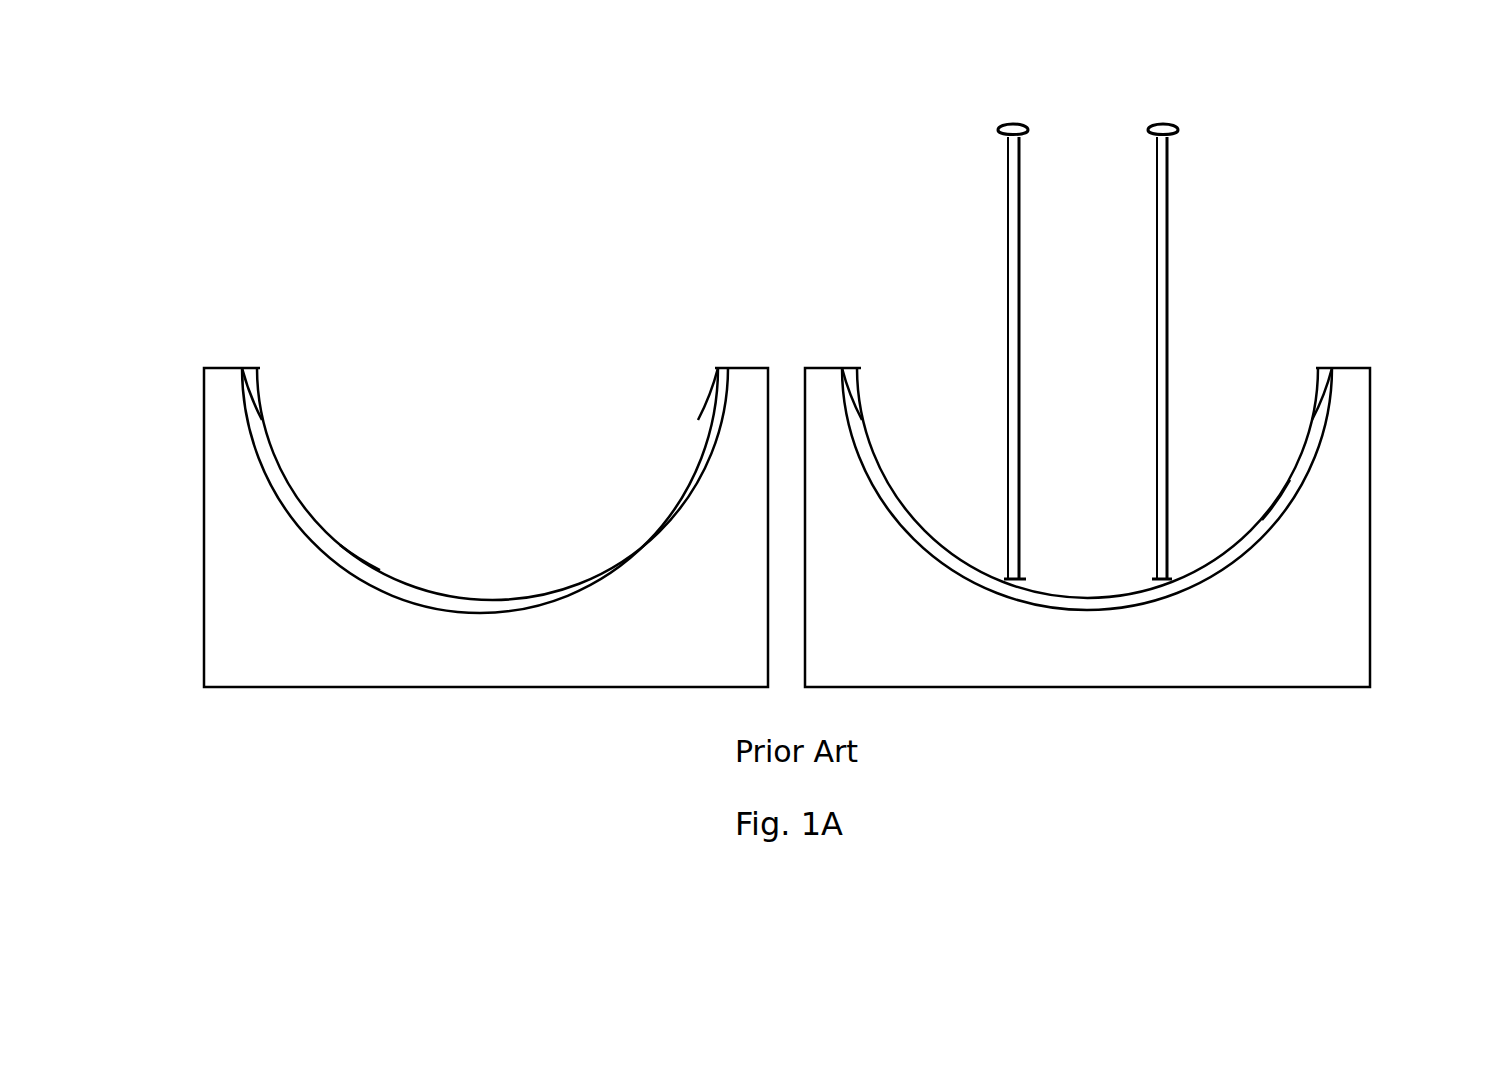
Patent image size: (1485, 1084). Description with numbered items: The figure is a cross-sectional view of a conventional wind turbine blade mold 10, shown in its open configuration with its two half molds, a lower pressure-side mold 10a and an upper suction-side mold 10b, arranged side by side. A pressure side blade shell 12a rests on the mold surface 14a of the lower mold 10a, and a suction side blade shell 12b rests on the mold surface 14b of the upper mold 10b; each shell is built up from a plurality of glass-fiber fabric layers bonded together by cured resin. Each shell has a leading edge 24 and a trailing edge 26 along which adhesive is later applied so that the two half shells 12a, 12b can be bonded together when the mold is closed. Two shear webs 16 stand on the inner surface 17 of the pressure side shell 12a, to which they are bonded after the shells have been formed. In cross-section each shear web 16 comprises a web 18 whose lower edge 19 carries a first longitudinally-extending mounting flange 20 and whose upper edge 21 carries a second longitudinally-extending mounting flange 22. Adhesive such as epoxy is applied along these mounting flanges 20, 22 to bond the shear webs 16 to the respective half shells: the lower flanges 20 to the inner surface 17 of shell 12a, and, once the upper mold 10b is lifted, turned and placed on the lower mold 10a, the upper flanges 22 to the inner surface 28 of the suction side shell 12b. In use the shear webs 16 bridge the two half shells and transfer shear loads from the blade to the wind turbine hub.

The mold 10 is at (768, 203).
The lower pressure-side mold 10a is at (1358, 665).
The upper suction-side mold 10b is at (222, 663).
The pressure side blade shell 12a is at (1313, 418).
The suction side blade shell 12b is at (630, 555).
The mold surface 14a is at (865, 437).
The mold surface 14b is at (265, 437).
The shear web 16 is at (1148, 305).
The inner surface 17 is at (1275, 498).
The web 18 is at (1006, 233).
The lower edge 19 is at (1145, 570).
The first longitudinally-extending mounting flange 20 is at (1001, 577).
The upper edge 21 is at (1147, 102).
The second longitudinally-extending mounting flange 22 is at (1010, 122).
The leading edge 24 is at (725, 367).
The trailing edge 26 is at (246, 367).
The inner surface 28 is at (362, 558).